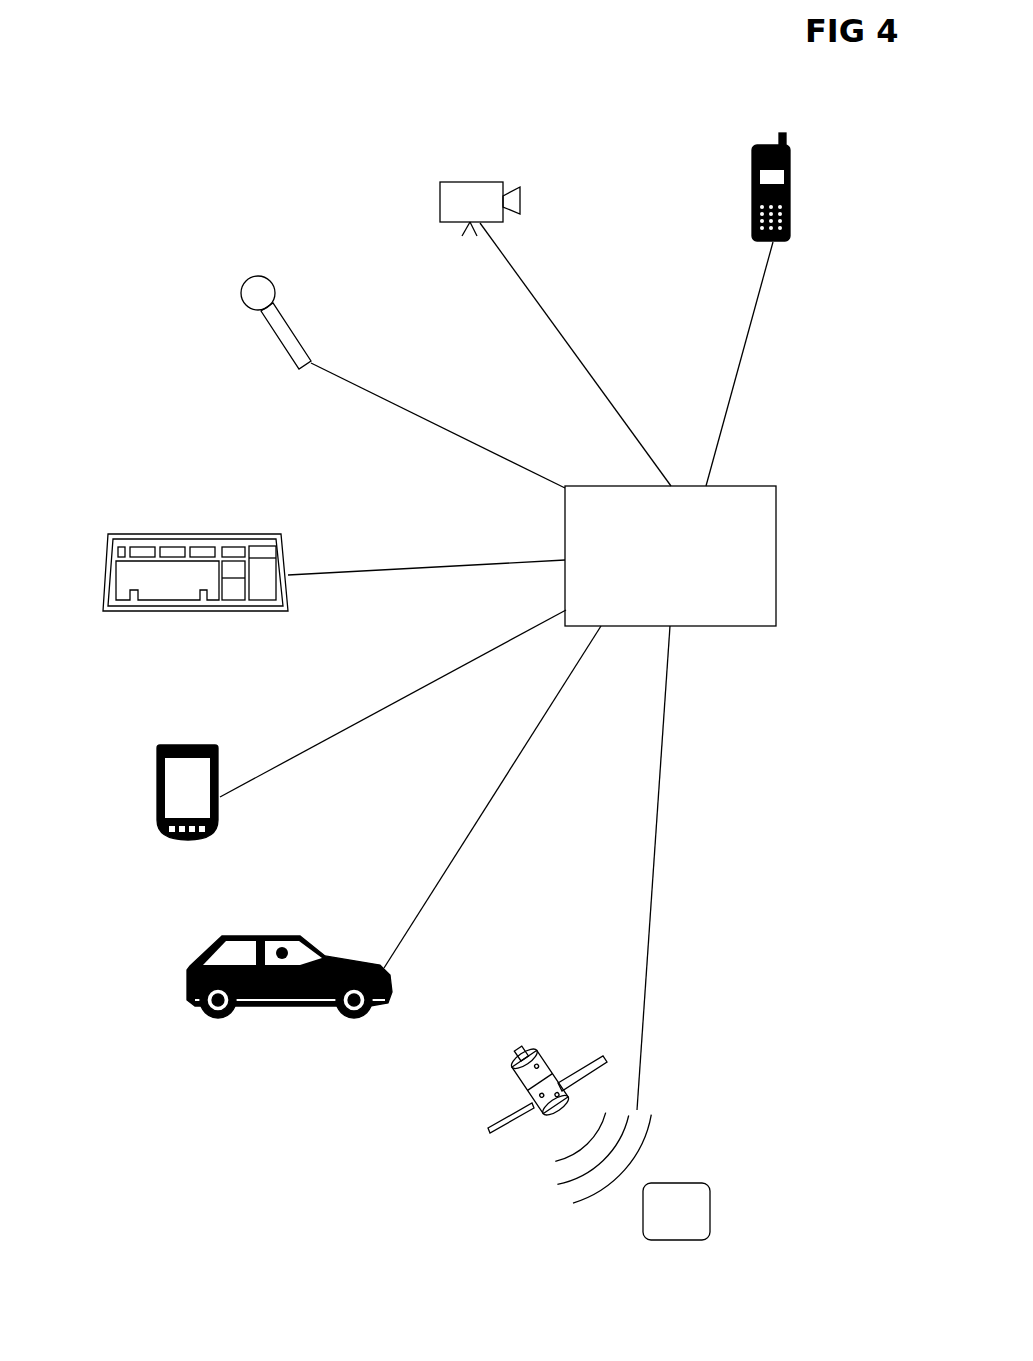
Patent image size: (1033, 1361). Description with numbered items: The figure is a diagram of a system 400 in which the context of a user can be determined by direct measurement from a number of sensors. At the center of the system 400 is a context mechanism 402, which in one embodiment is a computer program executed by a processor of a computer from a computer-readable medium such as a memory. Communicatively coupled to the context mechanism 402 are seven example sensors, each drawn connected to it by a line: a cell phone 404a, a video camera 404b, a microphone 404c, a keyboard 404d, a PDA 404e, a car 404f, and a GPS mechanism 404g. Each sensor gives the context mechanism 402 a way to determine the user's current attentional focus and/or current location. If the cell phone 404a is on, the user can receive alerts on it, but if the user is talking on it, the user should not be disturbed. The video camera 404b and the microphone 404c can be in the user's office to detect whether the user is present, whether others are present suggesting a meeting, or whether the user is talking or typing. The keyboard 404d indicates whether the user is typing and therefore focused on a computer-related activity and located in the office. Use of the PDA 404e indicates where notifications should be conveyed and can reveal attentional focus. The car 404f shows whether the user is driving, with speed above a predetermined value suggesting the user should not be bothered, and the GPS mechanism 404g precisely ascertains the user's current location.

The system 400 is at (784, 924).
The context mechanism 402 is at (778, 562).
The cell phone 404a is at (752, 195).
The video camera 404b is at (440, 220).
The microphone 404c is at (243, 298).
The keyboard 404d is at (105, 572).
The PDA 404e is at (157, 789).
The car 404f is at (184, 999).
The GPS mechanism 404g is at (560, 1196).